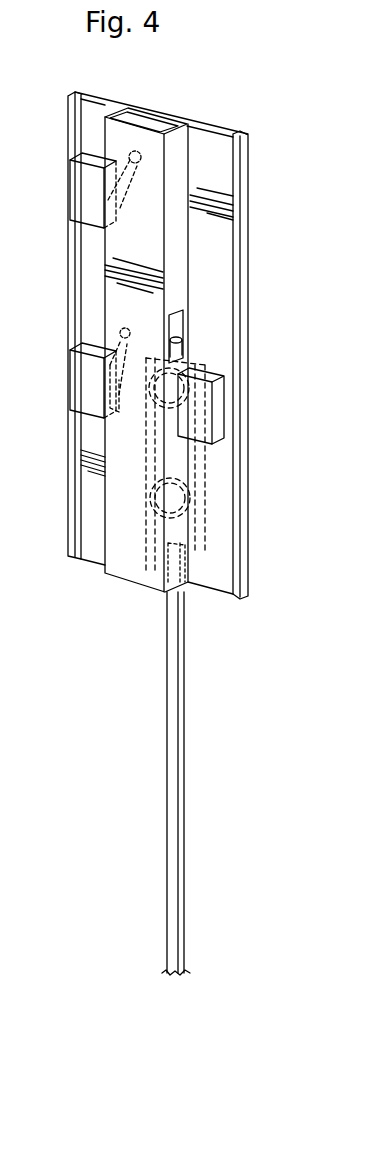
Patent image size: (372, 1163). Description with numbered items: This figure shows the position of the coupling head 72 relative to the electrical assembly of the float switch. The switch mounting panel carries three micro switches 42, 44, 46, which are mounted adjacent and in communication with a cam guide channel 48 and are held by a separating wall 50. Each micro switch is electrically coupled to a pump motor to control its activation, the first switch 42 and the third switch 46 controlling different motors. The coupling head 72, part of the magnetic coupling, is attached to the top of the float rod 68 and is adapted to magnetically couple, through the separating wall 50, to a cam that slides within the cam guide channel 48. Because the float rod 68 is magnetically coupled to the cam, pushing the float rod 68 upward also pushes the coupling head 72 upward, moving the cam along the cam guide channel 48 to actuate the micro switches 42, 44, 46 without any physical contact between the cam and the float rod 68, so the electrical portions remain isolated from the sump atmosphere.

The first micro switch 42 is at (83, 377).
The second micro switch 44 is at (218, 405).
The third micro switch 46 is at (83, 192).
The cam guide channel 48 is at (151, 116).
The separating wall 50 is at (205, 138).
The float rod 68 is at (172, 732).
The coupling head 72 is at (200, 511).